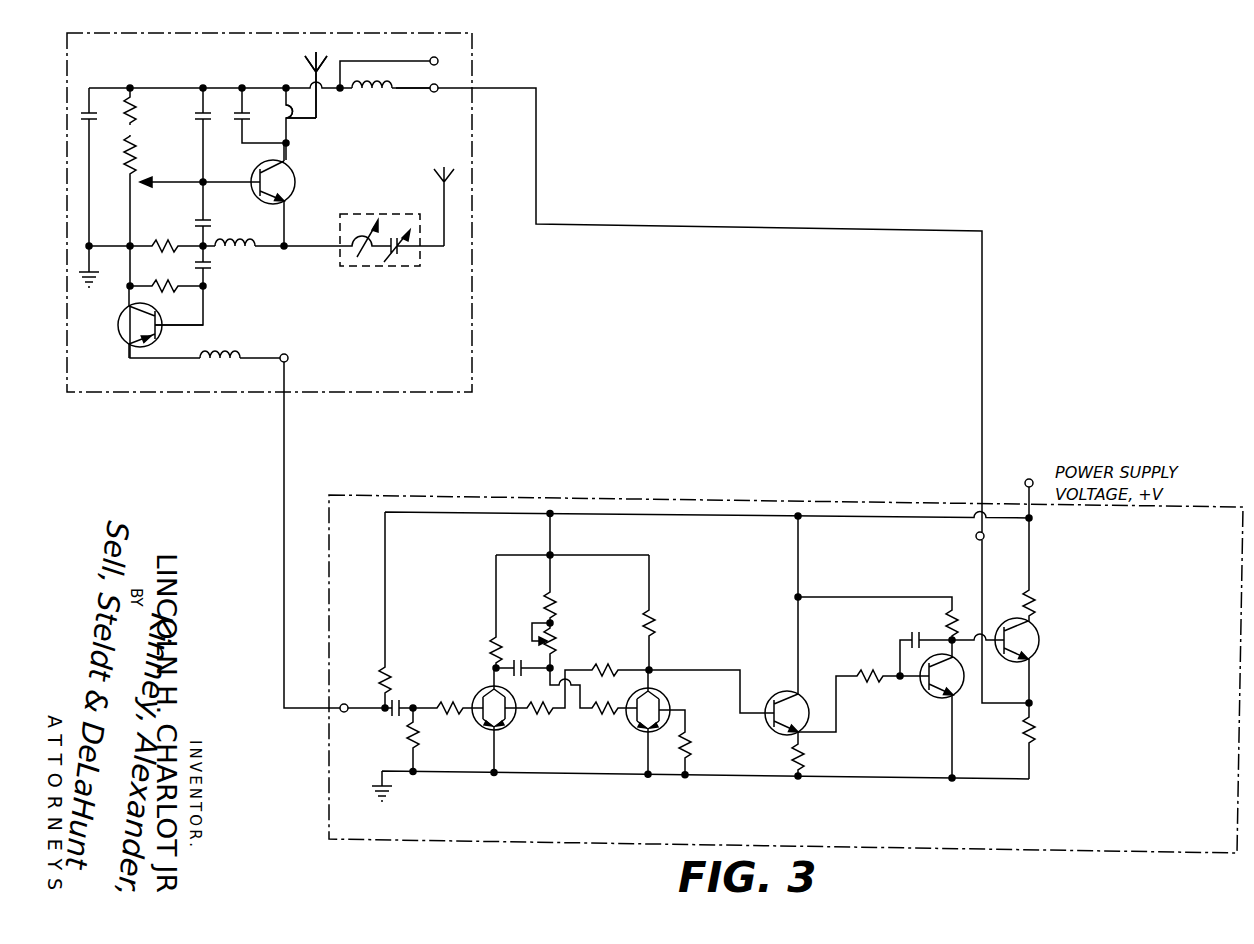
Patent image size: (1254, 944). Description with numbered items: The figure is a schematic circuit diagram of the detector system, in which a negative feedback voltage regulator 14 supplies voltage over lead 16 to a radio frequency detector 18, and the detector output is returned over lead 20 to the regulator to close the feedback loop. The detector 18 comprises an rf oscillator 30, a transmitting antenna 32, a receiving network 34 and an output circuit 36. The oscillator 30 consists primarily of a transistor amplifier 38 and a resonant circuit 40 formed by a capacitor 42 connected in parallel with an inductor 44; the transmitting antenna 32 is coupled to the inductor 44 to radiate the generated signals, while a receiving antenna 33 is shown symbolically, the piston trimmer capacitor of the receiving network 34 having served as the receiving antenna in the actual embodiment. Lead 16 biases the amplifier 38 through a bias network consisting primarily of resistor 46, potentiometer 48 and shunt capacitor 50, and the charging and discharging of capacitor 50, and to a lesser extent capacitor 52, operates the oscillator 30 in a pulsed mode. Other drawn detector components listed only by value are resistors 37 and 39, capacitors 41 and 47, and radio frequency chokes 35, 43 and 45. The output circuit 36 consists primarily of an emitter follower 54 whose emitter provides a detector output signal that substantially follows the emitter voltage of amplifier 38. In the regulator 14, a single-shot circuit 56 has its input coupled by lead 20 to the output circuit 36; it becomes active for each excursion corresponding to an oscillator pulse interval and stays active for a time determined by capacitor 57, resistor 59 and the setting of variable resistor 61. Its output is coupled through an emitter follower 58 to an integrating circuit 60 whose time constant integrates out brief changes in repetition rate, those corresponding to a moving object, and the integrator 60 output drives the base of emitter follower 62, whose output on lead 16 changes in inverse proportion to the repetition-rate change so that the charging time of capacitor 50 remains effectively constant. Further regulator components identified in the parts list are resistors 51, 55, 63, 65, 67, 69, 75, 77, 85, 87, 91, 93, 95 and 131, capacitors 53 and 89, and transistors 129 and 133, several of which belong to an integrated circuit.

The negative feedback voltage regulator 14 is at (765, 496).
The lead 16 is at (804, 228).
The radio frequency detector 18 is at (348, 393).
The lead 20 is at (282, 528).
The rf oscillator 30 is at (298, 183).
The transmitting antenna 32 is at (308, 72).
The receiving antenna 33 is at (447, 211).
The receiving network 34 is at (395, 208).
The radio frequency choke 35 is at (228, 355).
The output circuit 36 is at (112, 343).
The resistor 37 is at (165, 282).
The transistor amplifier 38 is at (292, 166).
The resistor 39 is at (166, 236).
The resonant circuit 40 is at (255, 78).
The capacitor 41 is at (210, 272).
The capacitor 42 is at (246, 122).
The radio frequency choke 43 is at (243, 256).
The inductor 44 is at (292, 124).
The radio frequency choke 45 is at (368, 92).
The resistor 46 is at (140, 103).
The capacitor 47 is at (97, 124).
The potentiometer 48 is at (163, 161).
The shunt capacitor 50 is at (216, 204).
The resistor 51 is at (380, 676).
The capacitor 52 is at (207, 121).
The capacitor 53 is at (399, 702).
The emitter follower 54 is at (120, 318).
The resistor 55 is at (417, 732).
The single-shot circuit 56 is at (475, 683).
The capacitor 57 is at (514, 656).
The emitter follower 58 is at (782, 692).
The resistor 59 is at (557, 614).
The integrating circuit 60 is at (880, 658).
The variable resistor 61 is at (555, 634).
The emitter follower 62 is at (1036, 655).
The resistor 63 is at (452, 716).
The resistor 65 is at (544, 716).
The resistor 67 is at (608, 722).
The resistor 69 is at (690, 744).
The resistor 75 is at (488, 646).
The resistor 77 is at (657, 624).
The resistor 85 is at (804, 750).
The resistor 87 is at (862, 672).
The capacitor 89 is at (930, 632).
The resistor 91 is at (954, 606).
The resistor 93 is at (1036, 732).
The resistor 95 is at (1036, 606).
The transistor 129 is at (666, 702).
The resistor 131 is at (606, 667).
The transistor 133 is at (922, 699).